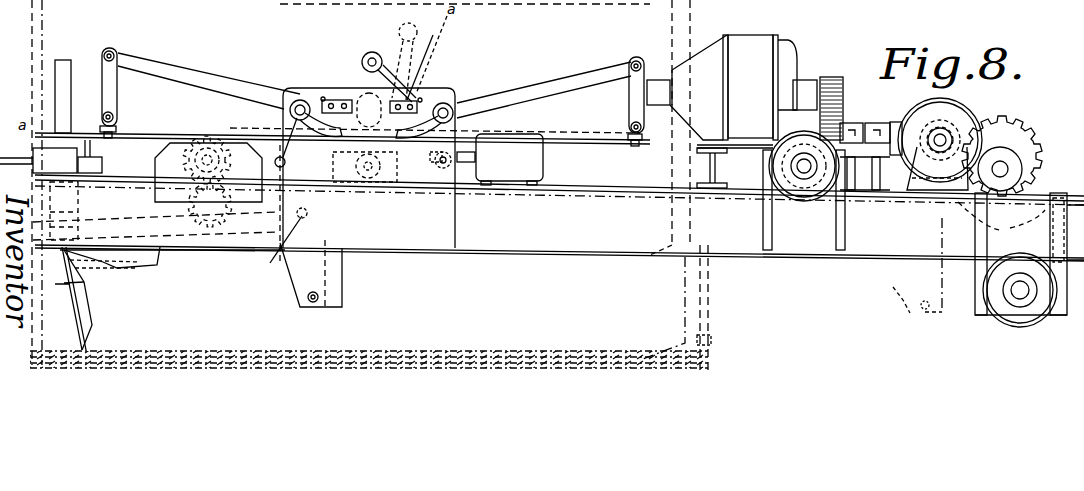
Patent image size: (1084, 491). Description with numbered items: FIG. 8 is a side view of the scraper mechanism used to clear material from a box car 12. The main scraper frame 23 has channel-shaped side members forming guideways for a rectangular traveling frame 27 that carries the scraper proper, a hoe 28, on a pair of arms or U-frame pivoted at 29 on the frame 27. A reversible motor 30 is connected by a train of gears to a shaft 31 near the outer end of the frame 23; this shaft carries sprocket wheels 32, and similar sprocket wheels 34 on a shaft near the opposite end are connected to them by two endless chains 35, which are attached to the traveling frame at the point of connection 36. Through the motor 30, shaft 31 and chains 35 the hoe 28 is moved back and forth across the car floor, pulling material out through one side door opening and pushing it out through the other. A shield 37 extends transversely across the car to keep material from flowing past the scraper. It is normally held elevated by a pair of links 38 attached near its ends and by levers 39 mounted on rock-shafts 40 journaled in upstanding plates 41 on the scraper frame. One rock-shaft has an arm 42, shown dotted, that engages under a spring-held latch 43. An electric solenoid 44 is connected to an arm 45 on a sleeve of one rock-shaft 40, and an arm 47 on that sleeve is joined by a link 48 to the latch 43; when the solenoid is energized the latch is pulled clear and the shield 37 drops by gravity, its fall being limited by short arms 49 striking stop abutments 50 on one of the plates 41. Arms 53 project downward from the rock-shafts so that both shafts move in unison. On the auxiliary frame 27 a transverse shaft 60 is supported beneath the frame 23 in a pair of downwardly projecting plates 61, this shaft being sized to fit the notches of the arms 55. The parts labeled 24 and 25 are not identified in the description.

The box car 12 is at (43, 24).
The scraper frame 23 is at (738, 248).
The drive pulley 24 is at (806, 200).
The supporting wheel 25 is at (1012, 322).
The rectangular frame 27 is at (253, 252).
The hoe 28 is at (84, 301).
The pivot 29 is at (290, 258).
The reversible motor 30 is at (754, 40).
The shaft 31 is at (1001, 168).
The sprocket wheels 32 is at (1010, 158).
The sprocket wheels 34 is at (190, 136).
The endless chains 35 is at (233, 135).
The point of connection 36 is at (365, 188).
The shield 37 is at (683, 316).
The links 38 is at (118, 98).
The levers 39 is at (172, 72).
The rock-shafts 40 is at (300, 100).
The upstanding plates 41 is at (329, 97).
The arm 42 is at (369, 88).
The latch 43 is at (399, 35).
The electric solenoid 44 is at (509, 159).
The arm 45 is at (369, 168).
The arm 47 is at (462, 141).
The link 48 is at (435, 160).
The short arms 49 is at (323, 136).
The stop abutments 50 is at (323, 97).
The arms 53 is at (276, 155).
The arms 55 is at (368, 53).
The transverse shaft 60 is at (312, 303).
The plates 61 is at (290, 283).